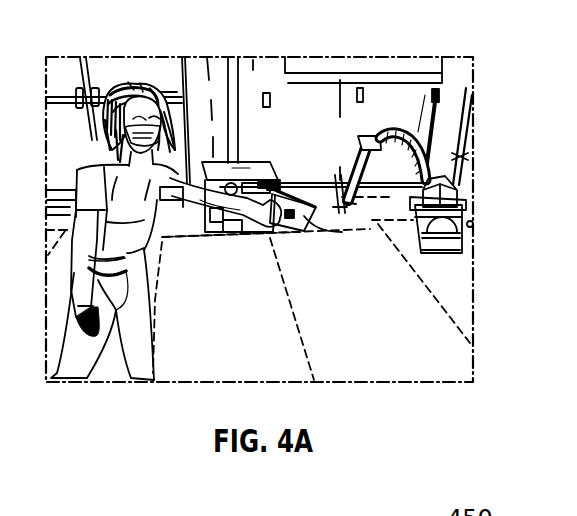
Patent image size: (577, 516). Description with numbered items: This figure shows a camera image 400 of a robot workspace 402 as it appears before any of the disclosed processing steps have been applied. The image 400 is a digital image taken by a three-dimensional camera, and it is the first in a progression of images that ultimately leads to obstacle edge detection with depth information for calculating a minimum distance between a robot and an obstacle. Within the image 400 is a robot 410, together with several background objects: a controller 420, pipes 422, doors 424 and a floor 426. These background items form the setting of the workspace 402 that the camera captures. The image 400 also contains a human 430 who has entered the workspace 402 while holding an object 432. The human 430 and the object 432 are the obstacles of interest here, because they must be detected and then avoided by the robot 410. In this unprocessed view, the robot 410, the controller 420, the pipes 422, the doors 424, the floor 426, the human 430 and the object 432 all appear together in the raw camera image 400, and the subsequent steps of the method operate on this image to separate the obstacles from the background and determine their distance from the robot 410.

The camera image 400 is at (385, 57).
The robot workspace 402 is at (422, 336).
The robot 410 is at (445, 255).
The controller 420 is at (225, 237).
The pipes 422 is at (240, 107).
The doors 424 is at (145, 64).
The floor 426 is at (383, 327).
The human 430 is at (160, 236).
The object 432 is at (305, 237).